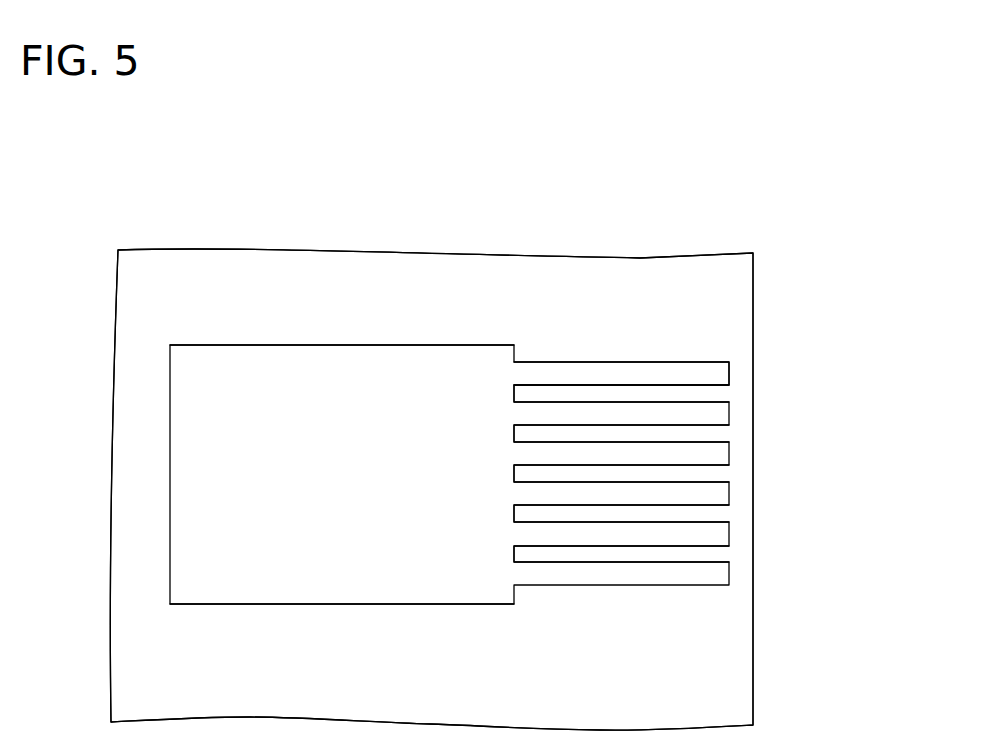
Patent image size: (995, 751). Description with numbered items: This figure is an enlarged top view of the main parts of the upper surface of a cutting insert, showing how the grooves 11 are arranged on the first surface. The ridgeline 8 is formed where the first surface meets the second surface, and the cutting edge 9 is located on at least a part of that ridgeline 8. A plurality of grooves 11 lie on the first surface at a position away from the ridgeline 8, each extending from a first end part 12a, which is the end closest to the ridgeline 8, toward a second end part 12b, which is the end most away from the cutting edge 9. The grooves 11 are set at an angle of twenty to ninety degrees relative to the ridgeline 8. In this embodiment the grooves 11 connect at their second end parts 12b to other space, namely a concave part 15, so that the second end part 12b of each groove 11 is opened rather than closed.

The ridgeline 8 is at (752, 657).
The cutting edge 9 is at (752, 463).
The groove 11 is at (625, 373).
The first end part 12a is at (730, 374).
The second end part 12b is at (513, 373).
The concave part 15 is at (320, 482).